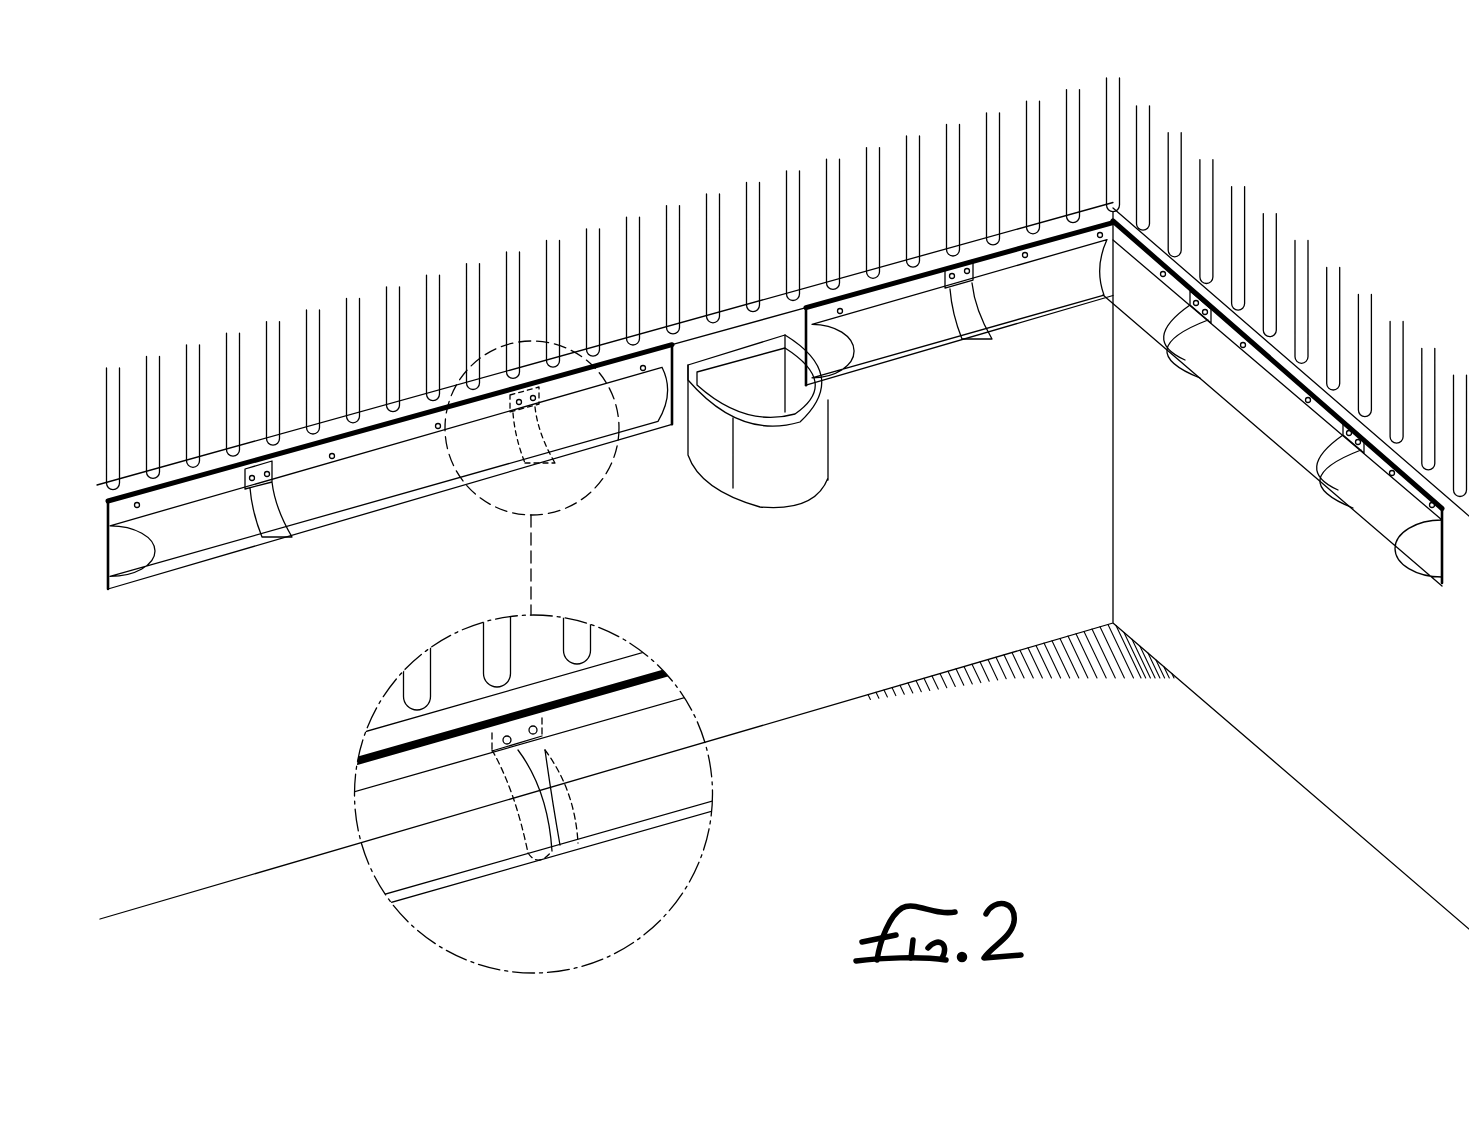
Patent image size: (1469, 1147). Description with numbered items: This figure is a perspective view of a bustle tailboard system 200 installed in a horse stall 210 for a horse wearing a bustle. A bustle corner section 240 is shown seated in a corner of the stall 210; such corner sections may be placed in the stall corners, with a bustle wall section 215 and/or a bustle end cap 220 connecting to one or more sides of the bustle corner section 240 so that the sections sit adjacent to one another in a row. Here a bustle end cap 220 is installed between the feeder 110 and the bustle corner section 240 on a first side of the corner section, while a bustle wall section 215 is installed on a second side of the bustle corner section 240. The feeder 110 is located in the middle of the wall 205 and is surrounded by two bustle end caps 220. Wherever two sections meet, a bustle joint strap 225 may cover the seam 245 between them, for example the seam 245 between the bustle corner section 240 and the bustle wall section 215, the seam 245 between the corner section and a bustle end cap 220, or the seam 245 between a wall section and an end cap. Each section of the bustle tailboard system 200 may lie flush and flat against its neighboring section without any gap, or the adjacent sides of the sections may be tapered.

The feeder 110 is at (798, 471).
The bustle tailboard system 200 is at (1296, 520).
The wall 205 is at (774, 620).
The stall 210 is at (707, 208).
The bustle wall section 215 is at (395, 475).
The bustle end cap 220 is at (190, 532).
The bustle joint strap 225 is at (275, 520).
The bustle corner section 240 is at (1040, 285).
The seam 245 is at (560, 797).